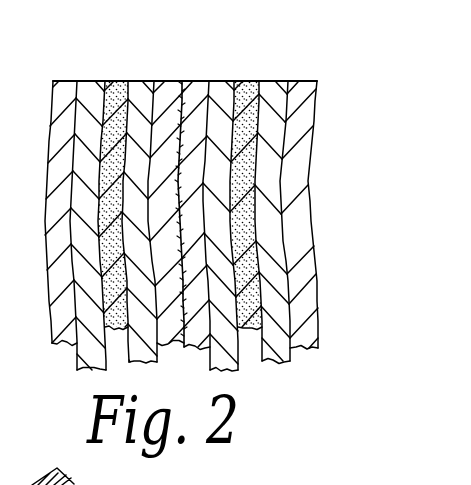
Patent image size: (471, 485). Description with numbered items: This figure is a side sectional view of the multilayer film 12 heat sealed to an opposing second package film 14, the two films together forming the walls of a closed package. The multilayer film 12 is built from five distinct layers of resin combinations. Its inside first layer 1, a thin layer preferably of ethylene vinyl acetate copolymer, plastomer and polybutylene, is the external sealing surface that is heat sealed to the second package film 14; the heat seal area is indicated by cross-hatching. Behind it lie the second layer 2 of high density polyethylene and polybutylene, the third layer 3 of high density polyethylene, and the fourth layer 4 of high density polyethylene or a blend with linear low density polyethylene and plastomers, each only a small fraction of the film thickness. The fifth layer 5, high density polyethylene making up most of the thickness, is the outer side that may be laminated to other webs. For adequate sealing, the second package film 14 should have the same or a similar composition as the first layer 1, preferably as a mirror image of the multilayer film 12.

The first layer 1 is at (202, 81).
The second layer 2 is at (218, 81).
The third layer 3 is at (248, 81).
The fourth layer 4 is at (273, 81).
The fifth layer 5 is at (308, 81).
The multilayer film 12 is at (303, 382).
The second package film 14 is at (56, 357).